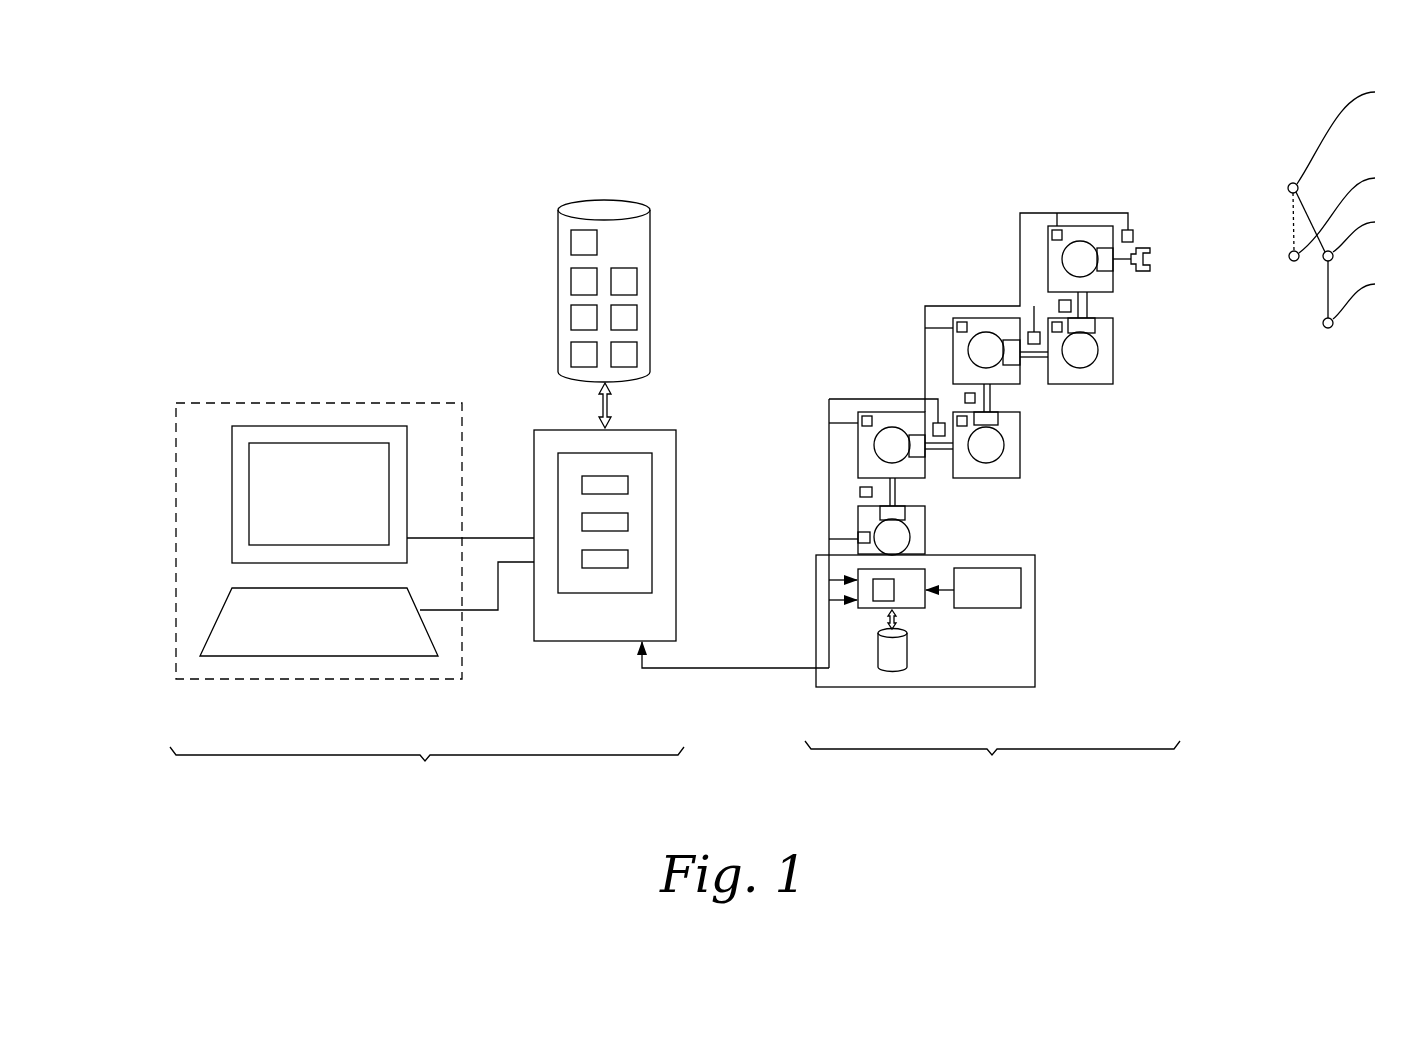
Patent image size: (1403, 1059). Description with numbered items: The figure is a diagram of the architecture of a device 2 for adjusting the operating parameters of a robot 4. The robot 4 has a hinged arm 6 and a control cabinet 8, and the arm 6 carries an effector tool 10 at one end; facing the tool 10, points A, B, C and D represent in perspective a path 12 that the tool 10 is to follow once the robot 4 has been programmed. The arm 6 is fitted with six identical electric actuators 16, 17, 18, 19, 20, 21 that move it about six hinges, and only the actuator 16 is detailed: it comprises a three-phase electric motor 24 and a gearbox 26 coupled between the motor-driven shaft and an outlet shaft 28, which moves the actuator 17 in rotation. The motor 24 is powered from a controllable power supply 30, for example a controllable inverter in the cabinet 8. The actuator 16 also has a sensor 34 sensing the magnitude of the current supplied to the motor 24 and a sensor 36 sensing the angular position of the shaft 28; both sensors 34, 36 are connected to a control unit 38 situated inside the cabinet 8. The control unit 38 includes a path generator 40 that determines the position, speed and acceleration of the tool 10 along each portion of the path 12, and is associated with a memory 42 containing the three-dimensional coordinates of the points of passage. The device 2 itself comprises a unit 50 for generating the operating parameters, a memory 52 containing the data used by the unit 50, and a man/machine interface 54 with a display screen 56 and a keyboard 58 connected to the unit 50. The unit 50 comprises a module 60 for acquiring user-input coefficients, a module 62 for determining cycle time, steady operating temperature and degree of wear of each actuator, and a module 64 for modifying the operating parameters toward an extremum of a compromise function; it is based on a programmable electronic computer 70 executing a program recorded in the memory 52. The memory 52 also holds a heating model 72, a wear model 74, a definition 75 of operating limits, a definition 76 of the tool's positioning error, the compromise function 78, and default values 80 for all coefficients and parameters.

The device 2 is at (427, 768).
The robot 4 is at (992, 765).
The hinged arm 6 is at (1186, 444).
The control cabinet 8 is at (1038, 624).
The effector tool 10 is at (1151, 258).
The path 12 is at (1311, 205).
The electric actuator 16 is at (934, 506).
The electric actuator 17 is at (931, 481).
The electric actuator 18 is at (1024, 443).
The electric actuator 19 is at (951, 352).
The electric actuator 20 is at (1119, 353).
The electric actuator 21 is at (1119, 293).
The three-phase electric motor 24 is at (908, 536).
The gearbox 26 is at (884, 515).
The outlet shaft 28 is at (891, 490).
The controllable power supply 30 is at (1023, 592).
The current sensor 34 is at (859, 537).
The angular position sensor 36 is at (862, 490).
The control unit 38 is at (932, 611).
The path generator 40 is at (860, 576).
The memory 42 is at (872, 648).
The unit for generating operating parameters 50 is at (614, 448).
The memory 52 is at (652, 250).
The man/machine interface 54 is at (172, 400).
The display screen 56 is at (231, 492).
The keyboard 58 is at (215, 612).
The coefficient acquisition module 60 is at (606, 560).
The determination module 62 is at (606, 484).
The parameter modification module 64 is at (598, 522).
The programmable electronic computer 70 is at (678, 611).
The heating model 72 is at (625, 355).
The wear model 74 is at (585, 357).
The definition of operating limits 75 is at (625, 318).
The definition of positioning error 76 is at (584, 243).
The compromise function 78 is at (630, 277).
The default values 80 is at (585, 280).